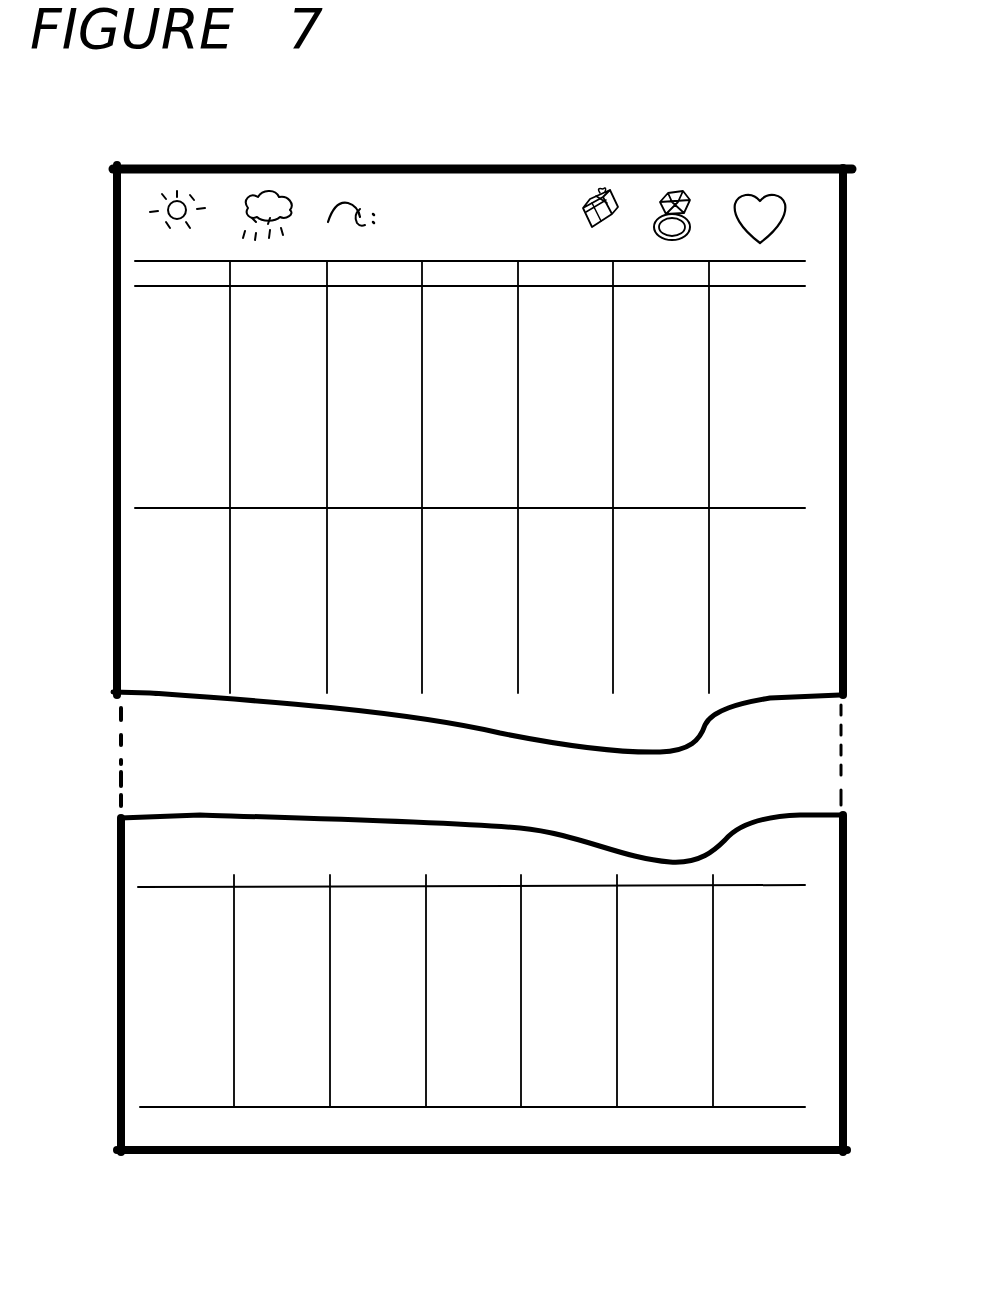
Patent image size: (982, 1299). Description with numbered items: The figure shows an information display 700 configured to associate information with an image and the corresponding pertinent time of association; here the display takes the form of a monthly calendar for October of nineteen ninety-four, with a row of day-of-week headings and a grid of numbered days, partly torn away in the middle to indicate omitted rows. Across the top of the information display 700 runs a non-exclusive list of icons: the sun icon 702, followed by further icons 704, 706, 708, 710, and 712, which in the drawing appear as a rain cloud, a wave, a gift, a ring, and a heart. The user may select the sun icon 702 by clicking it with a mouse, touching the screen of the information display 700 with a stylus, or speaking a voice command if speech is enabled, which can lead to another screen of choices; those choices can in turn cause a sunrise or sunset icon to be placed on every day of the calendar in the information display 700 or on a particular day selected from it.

The information display 700 is at (724, 107).
The sun icon 702 is at (148, 200).
The rain cloud icon 704 is at (273, 192).
The wave icon 706 is at (392, 143).
The gift icon 708 is at (602, 193).
The ring icon 710 is at (700, 143).
The heart icon 712 is at (777, 195).